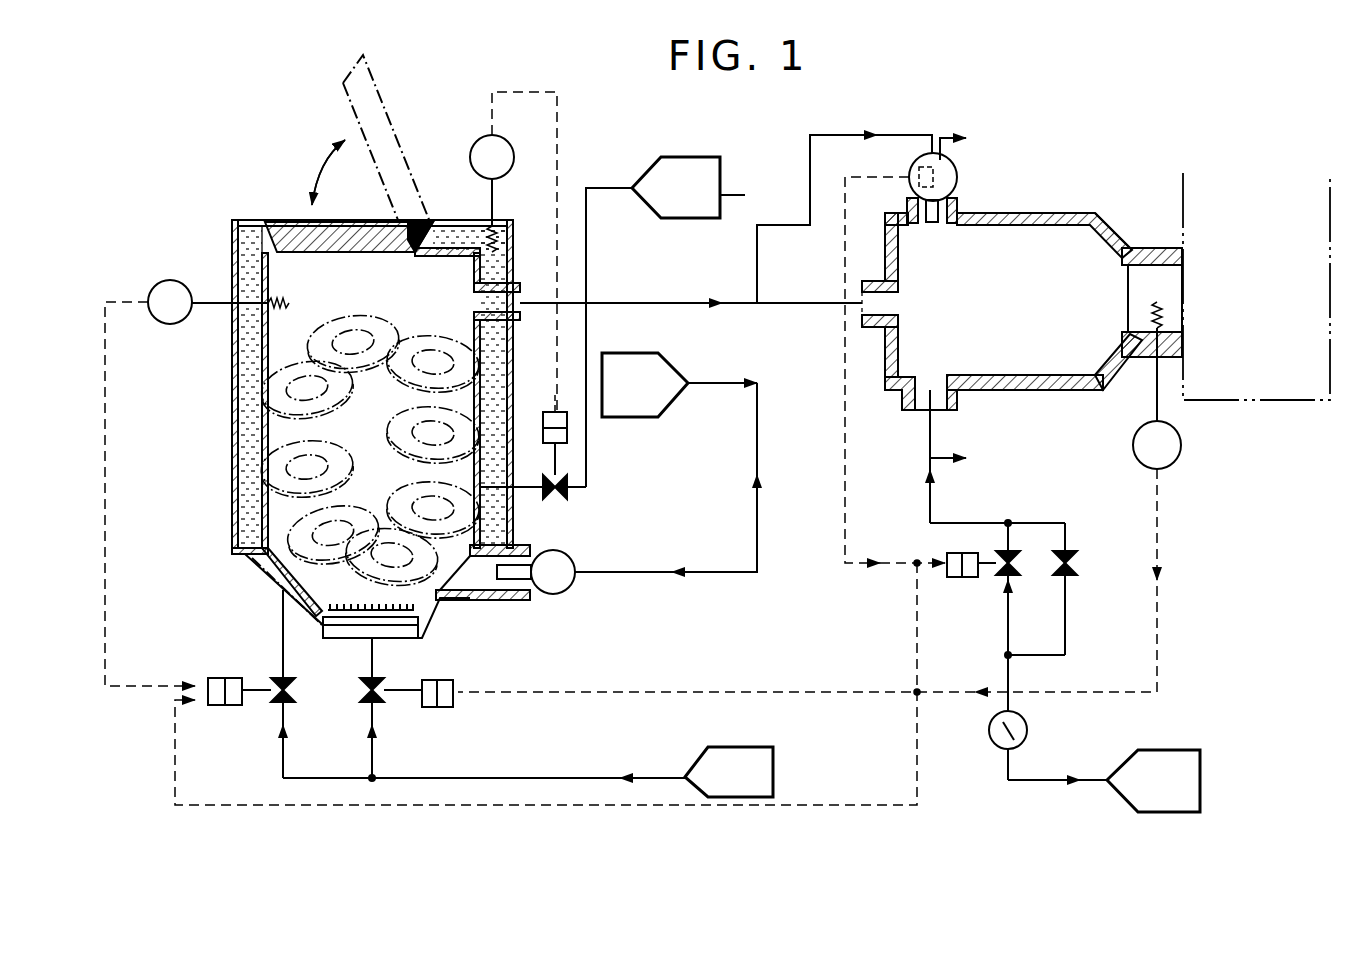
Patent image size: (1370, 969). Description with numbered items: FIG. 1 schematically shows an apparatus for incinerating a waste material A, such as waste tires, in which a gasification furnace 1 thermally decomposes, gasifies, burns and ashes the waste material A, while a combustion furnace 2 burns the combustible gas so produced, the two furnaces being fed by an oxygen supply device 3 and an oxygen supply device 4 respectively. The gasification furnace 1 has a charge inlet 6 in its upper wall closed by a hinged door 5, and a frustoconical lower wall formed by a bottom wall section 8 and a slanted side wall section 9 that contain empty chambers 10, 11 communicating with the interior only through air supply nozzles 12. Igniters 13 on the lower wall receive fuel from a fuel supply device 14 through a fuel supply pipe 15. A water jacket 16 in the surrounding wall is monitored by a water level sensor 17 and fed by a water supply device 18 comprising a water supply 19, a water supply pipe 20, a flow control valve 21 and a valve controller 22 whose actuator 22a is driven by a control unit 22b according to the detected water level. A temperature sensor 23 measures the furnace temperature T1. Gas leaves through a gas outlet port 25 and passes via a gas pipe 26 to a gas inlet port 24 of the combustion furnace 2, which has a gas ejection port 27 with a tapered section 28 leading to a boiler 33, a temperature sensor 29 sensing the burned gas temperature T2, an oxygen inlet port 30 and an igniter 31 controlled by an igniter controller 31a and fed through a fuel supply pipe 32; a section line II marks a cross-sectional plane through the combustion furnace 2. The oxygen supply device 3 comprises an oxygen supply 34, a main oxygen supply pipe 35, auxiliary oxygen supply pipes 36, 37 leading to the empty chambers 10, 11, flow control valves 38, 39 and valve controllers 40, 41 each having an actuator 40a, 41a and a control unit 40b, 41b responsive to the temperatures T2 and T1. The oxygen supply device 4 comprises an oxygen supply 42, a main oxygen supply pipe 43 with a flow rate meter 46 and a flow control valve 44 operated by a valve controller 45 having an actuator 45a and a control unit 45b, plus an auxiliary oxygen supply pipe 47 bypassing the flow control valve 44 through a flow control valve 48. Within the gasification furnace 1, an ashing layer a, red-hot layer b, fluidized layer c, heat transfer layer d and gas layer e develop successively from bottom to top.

The gasification furnace 1 is at (215, 212).
The combustion furnace 2 is at (1040, 190).
The oxygen supply device 3 is at (345, 790).
The oxygen supply device 4 is at (1100, 620).
The hinged door 5 is at (286, 238).
The charge inlet 6 is at (412, 238).
The bottom wall section 8 is at (362, 630).
The slanted side wall section 9 is at (285, 592).
The empty chamber 10 is at (372, 630).
The empty chamber 11 is at (268, 572).
The air supply nozzles 12 is at (320, 618).
The igniters 13 is at (572, 590).
The fuel supply device 14 is at (700, 378).
The fuel supply pipe 15 is at (757, 578).
The water jacket 16 is at (238, 378).
The water level sensor 17 is at (478, 143).
The water supply device 18 is at (705, 148).
The water supply 19 is at (752, 189).
The water supply pipe 20 is at (586, 275).
The flow control valve 21 is at (562, 494).
The valve controller 22 is at (572, 430).
The actuator 22a is at (560, 445).
The control unit 22b is at (560, 412).
The temperature sensor 23 is at (170, 280).
The gas inlet port 24 is at (876, 330).
The gas outlet port 25 is at (505, 285).
The gas pipe 26 is at (697, 300).
The gas ejection port 27 is at (1154, 246).
The tapered section 28 is at (1112, 240).
The temperature sensor 29 is at (1182, 446).
The oxygen inlet port 30 is at (958, 397).
The igniter 31 is at (965, 172).
The igniter controller 31a is at (920, 168).
The fuel supply pipe 32 is at (757, 255).
The boiler 33 is at (1328, 210).
The oxygen supply 34 is at (745, 768).
The main oxygen supply pipe 35 is at (560, 776).
The auxiliary oxygen supply pipe 36 is at (375, 770).
The auxiliary oxygen supply pipe 37 is at (282, 738).
The flow control valve 38 is at (386, 700).
The flow control valve 39 is at (275, 680).
The valve controller 40 is at (455, 678).
The actuator 40a is at (440, 678).
The control unit 40b is at (462, 692).
The valve controller 41 is at (205, 678).
The actuator 41a is at (234, 706).
The control unit 41b is at (220, 706).
The oxygen supply 42 is at (1150, 798).
The main oxygen supply pipe 43 is at (1010, 677).
The flow control valve 44 is at (1005, 583).
The valve controller 45 is at (945, 553).
The actuator 45a is at (968, 580).
The control unit 45b is at (955, 580).
The flow rate meter 46 is at (1030, 732).
The auxiliary oxygen supply pipe 47 is at (1068, 606).
The flow control valve 48 is at (1072, 565).
The waste material A is at (329, 427).
The ashing layer a is at (292, 550).
The red-hot layer b is at (292, 502).
The fluidized layer c is at (282, 465).
The heat transfer layer d is at (272, 418).
The gas layer e is at (280, 340).
The temperature T1 is at (286, 284).
The temperature T2 is at (1151, 314).
The section line II is at (963, 290).